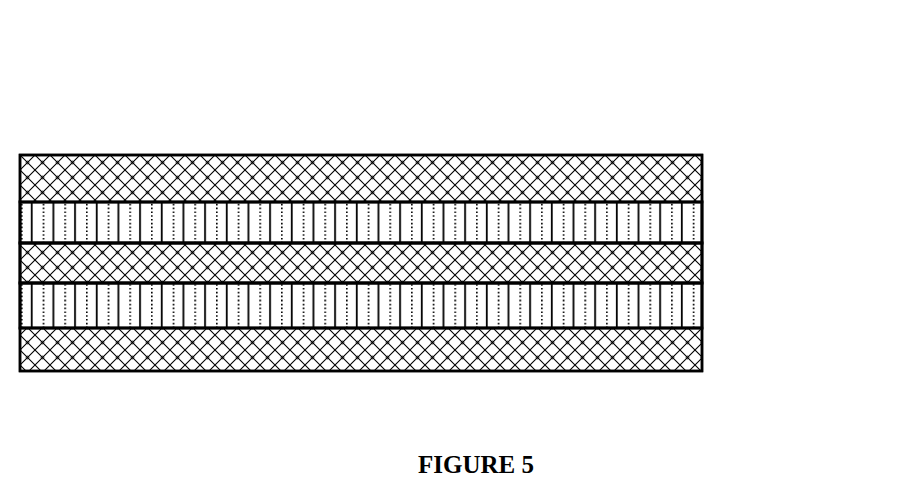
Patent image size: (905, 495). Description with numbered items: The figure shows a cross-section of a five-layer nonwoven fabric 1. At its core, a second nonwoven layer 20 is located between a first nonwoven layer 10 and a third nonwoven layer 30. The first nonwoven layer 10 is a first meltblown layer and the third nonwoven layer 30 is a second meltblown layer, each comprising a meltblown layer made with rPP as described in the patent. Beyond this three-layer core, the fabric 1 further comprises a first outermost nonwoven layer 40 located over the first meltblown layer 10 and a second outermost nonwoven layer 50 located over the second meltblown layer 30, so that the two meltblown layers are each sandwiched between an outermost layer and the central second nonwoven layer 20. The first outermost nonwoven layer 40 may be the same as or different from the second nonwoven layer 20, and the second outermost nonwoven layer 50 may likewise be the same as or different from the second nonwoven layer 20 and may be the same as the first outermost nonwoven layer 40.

The nonwoven fabric 1 is at (433, 100).
The first nonwoven layer 10 is at (702, 217).
The second nonwoven layer 20 is at (702, 263).
The third nonwoven layer 30 is at (702, 308).
The first outermost nonwoven layer 40 is at (702, 177).
The second outermost nonwoven layer 50 is at (702, 362).